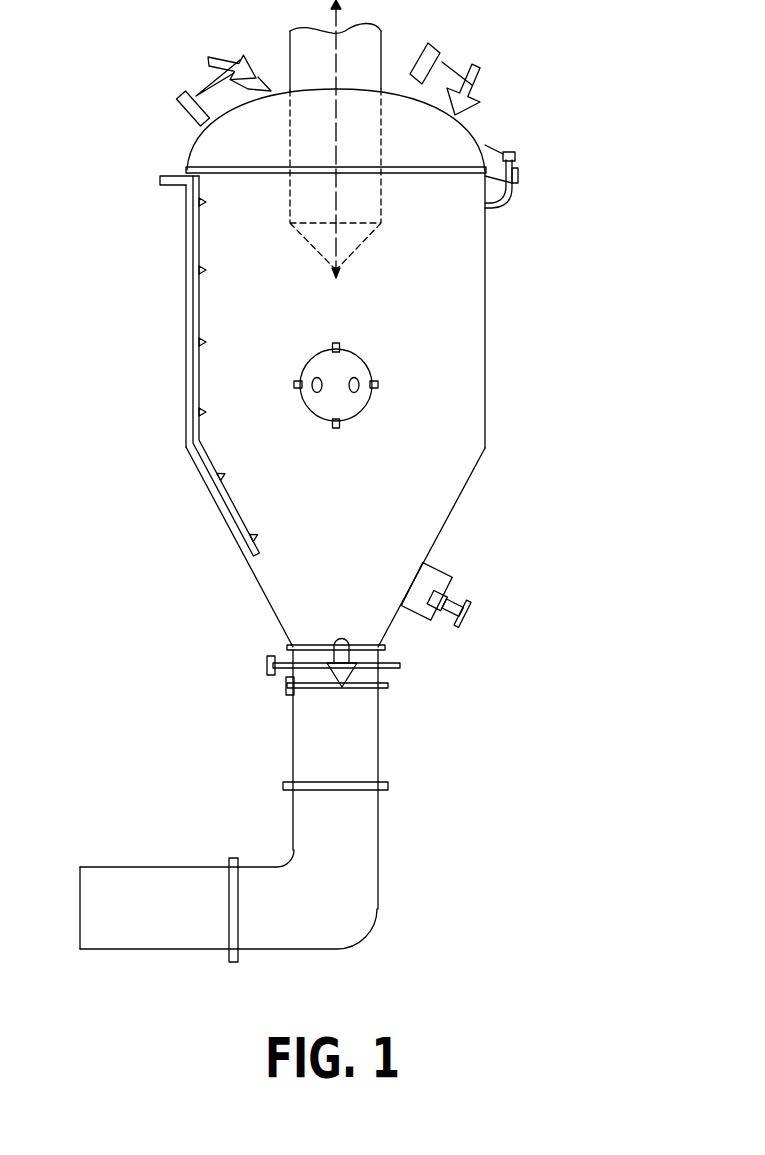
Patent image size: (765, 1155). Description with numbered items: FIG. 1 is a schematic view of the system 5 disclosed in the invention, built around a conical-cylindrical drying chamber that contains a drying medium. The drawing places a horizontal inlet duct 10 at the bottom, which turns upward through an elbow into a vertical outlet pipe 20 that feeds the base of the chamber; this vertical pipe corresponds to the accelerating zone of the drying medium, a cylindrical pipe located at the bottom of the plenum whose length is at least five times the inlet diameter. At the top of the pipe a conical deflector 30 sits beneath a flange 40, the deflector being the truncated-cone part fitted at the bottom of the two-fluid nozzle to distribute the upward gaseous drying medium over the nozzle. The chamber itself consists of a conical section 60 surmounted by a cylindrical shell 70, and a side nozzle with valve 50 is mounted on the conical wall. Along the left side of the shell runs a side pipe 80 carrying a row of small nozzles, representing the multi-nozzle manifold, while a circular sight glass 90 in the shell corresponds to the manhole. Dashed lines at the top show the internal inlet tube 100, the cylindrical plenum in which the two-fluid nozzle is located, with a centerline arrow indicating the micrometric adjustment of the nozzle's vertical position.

The system 5 is at (520, 118).
The inlet duct 10 is at (177, 867).
The outlet pipe 20 is at (293, 743).
The conical deflector 30 is at (350, 683).
The outlet flange 40 is at (386, 648).
The side nozzle with valve 50 is at (452, 578).
The conical section 60 is at (468, 477).
The cylindrical shell 70 is at (485, 403).
The side pipe with nozzles 80 is at (190, 290).
The sight glass 90 is at (357, 355).
The internal inlet tube 100 is at (360, 257).